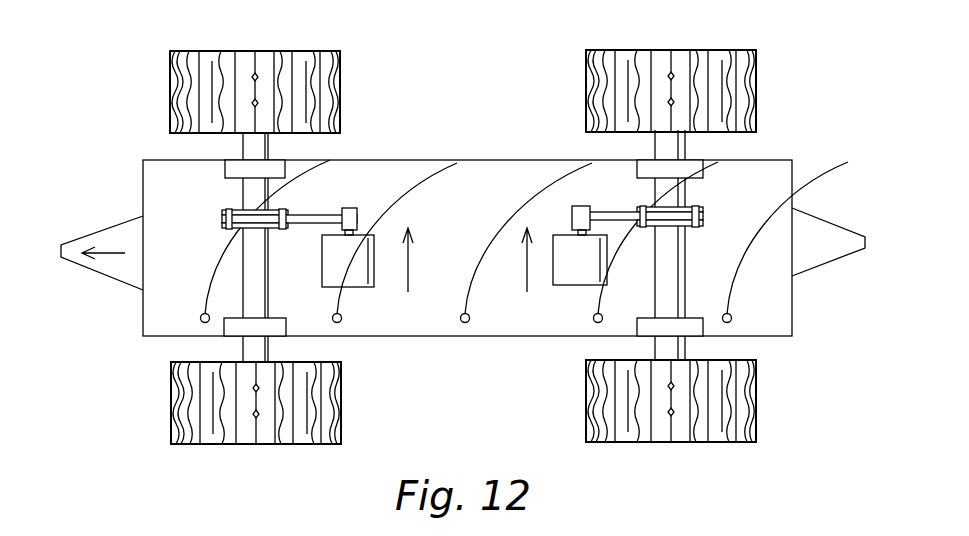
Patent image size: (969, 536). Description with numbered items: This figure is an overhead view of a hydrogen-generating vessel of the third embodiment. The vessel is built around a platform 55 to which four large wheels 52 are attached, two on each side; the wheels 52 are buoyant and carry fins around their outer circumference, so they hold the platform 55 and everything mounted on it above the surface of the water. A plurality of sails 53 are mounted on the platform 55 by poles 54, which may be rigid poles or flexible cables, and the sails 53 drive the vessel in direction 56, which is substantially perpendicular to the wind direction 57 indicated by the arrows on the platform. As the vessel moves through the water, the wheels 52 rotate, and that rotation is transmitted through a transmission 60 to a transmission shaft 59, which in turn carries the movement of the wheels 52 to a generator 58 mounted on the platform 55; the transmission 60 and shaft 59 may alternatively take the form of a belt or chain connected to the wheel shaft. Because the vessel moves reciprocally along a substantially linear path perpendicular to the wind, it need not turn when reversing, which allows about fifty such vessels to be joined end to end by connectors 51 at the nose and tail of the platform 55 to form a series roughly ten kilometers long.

The connector 51 is at (90, 237).
The wheel 52 is at (265, 60).
The sail 53 is at (438, 172).
The pole 54 is at (338, 322).
The platform 55 is at (152, 163).
The direction 56 is at (103, 258).
The wind direction 57 is at (409, 265).
The generator 58 is at (358, 287).
The transmission shaft 59 is at (352, 228).
The transmission 60 is at (222, 213).